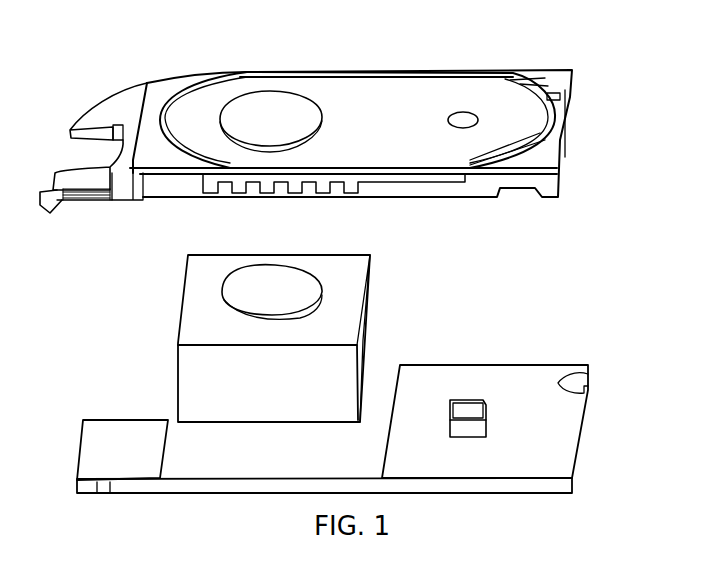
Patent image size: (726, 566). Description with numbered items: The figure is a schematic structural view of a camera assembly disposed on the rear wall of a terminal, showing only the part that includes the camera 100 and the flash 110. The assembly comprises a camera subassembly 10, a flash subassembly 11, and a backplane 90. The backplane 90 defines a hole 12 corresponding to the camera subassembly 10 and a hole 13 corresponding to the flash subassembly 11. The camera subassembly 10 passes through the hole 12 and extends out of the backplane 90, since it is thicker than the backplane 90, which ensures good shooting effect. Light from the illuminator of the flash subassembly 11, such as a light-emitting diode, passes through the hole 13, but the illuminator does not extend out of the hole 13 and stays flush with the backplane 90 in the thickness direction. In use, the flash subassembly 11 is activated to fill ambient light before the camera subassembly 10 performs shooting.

The camera subassembly 10 is at (326, 374).
The camera 100 is at (232, 287).
The flash 110 is at (500, 372).
The flash subassembly 11 is at (470, 413).
The backplane 90 is at (560, 152).
The hole 12 is at (322, 115).
The hole 13 is at (468, 112).